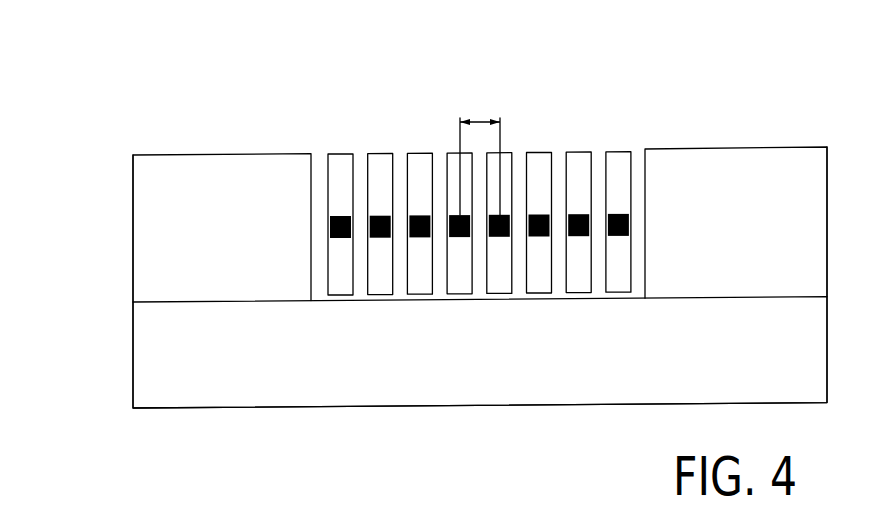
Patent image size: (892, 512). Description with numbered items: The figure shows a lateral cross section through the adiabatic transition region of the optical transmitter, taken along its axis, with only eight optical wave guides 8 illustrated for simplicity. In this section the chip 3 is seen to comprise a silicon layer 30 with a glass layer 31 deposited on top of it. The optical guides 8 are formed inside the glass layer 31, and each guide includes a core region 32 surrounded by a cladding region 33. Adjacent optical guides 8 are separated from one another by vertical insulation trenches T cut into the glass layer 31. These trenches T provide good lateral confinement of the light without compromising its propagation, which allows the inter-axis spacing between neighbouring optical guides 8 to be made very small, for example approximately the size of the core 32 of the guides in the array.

The chip 3 is at (82, 96).
The silicon layer 30 is at (118, 380).
The glass layer 31 is at (114, 240).
The core region 32 is at (340, 216).
The cladding region 33 is at (338, 152).
The optical wave guides 8 is at (617, 152).
The vertical insulation trenches T is at (400, 172).